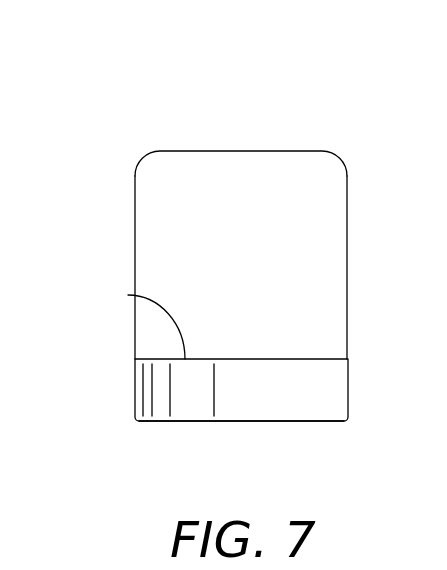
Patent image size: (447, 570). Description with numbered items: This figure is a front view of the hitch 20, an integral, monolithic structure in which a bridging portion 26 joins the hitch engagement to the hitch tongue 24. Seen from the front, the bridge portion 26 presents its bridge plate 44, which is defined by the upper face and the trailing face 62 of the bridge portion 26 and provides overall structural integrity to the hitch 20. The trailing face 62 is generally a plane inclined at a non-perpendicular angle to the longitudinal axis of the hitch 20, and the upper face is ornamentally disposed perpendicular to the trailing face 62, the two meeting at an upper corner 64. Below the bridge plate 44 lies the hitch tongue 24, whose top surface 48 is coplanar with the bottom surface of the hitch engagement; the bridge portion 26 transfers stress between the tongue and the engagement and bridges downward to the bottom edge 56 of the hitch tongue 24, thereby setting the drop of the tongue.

The hitch 20 is at (151, 108).
The bridging portion 26 is at (116, 177).
The upper corner 64 is at (223, 151).
The trailing face 62 is at (267, 188).
The bridge plate 44 is at (193, 256).
The top surface of the hitch tongue 48 is at (128, 295).
The hitch tongue 24 is at (311, 338).
The bottom edge of the hitch tongue 56 is at (195, 421).